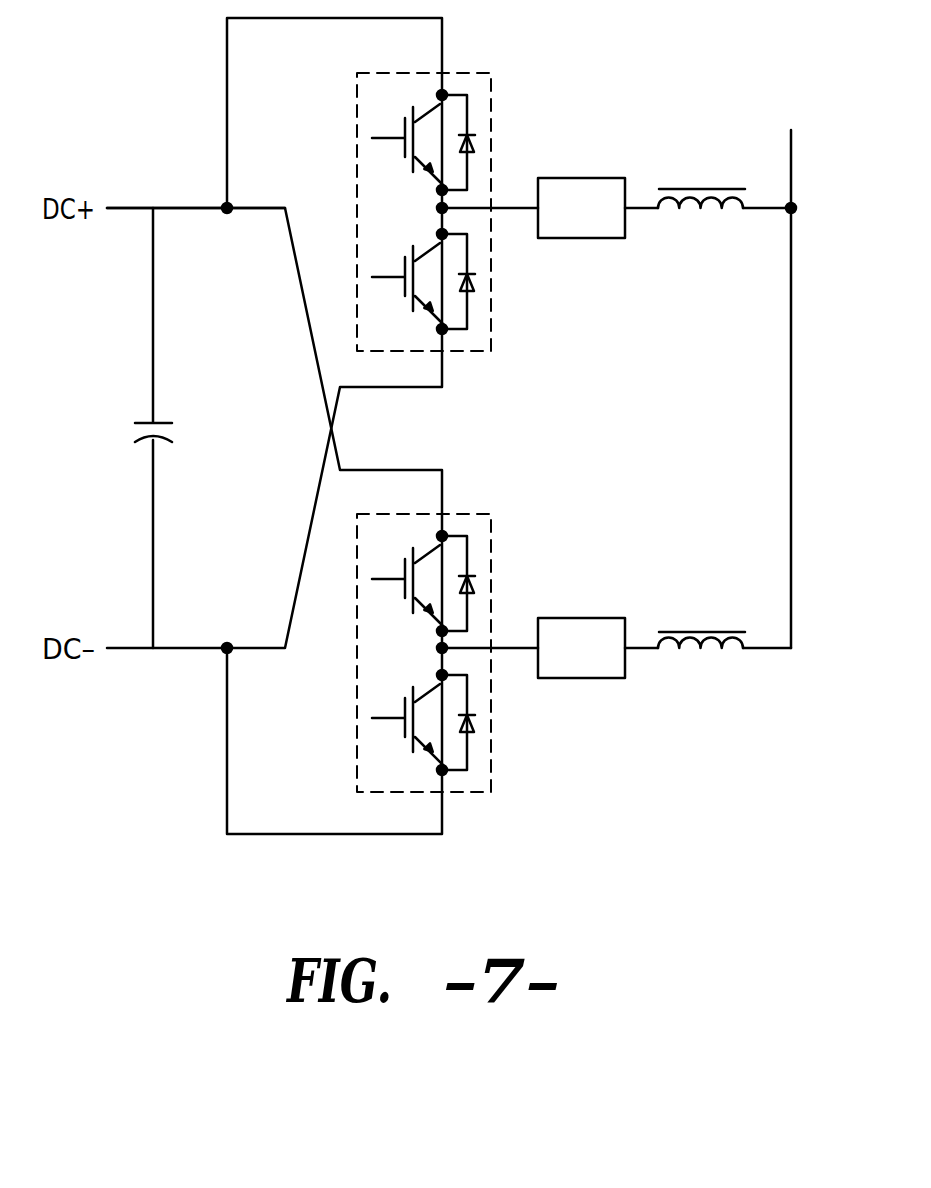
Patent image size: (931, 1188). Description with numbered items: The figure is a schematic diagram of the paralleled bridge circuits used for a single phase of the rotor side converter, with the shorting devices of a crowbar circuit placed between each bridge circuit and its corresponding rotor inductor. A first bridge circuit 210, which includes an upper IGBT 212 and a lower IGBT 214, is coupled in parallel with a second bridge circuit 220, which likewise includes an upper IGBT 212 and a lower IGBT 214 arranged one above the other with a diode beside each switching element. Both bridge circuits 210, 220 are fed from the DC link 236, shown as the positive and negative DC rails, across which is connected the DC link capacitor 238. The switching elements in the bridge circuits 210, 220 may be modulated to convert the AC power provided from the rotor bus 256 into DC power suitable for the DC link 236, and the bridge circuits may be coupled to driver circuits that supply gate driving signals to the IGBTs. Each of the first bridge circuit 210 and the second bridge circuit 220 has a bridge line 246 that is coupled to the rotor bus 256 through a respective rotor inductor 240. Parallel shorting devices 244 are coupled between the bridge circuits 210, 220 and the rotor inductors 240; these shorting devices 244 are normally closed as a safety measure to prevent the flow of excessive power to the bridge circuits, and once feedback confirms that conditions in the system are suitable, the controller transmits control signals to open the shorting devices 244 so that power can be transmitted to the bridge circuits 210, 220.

The first bridge circuit 210 is at (493, 78).
The second bridge circuit 220 is at (493, 519).
The upper IGBT 212 is at (467, 114).
The lower IGBT 214 is at (467, 317).
The DC link 236 is at (195, 205).
The DC link capacitor 238 is at (162, 422).
The shorting device 244 is at (605, 224).
The rotor inductor 240 is at (693, 205).
The bridge line 246 is at (643, 203).
The rotor bus 256 is at (790, 450).